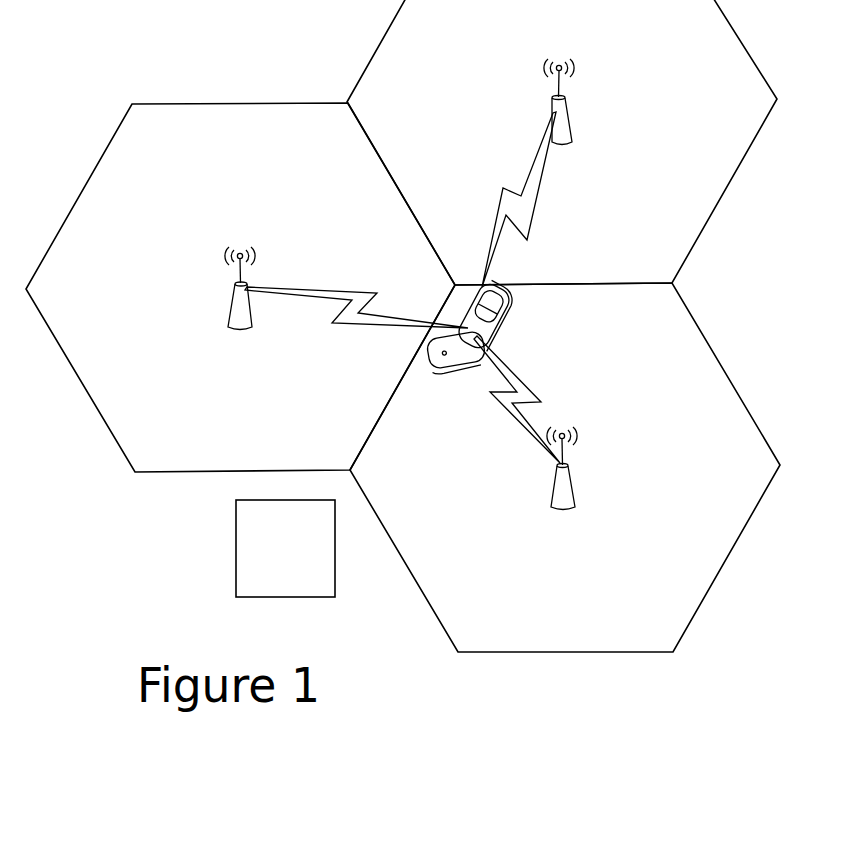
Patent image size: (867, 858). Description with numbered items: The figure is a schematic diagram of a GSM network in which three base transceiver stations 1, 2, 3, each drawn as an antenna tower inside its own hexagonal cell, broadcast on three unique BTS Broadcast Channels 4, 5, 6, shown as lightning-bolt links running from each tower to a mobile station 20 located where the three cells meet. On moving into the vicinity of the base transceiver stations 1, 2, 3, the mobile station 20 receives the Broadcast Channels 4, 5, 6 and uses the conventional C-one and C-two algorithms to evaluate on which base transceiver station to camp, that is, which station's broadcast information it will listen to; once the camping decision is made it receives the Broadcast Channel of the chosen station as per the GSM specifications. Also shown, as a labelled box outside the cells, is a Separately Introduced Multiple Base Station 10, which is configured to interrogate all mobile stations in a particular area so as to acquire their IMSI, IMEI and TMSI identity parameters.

The base transceiver station 1 is at (551, 490).
The base transceiver station 2 is at (229, 307).
The base transceiver station 3 is at (550, 108).
The BTS Broadcast Channel 4 is at (540, 388).
The BTS Broadcast Channel 5 is at (322, 292).
The BTS Broadcast Channel 6 is at (533, 216).
The Separately Introduced Multiple Base Station (SIMBTS) 10 is at (236, 540).
The mobile station 20 is at (447, 374).